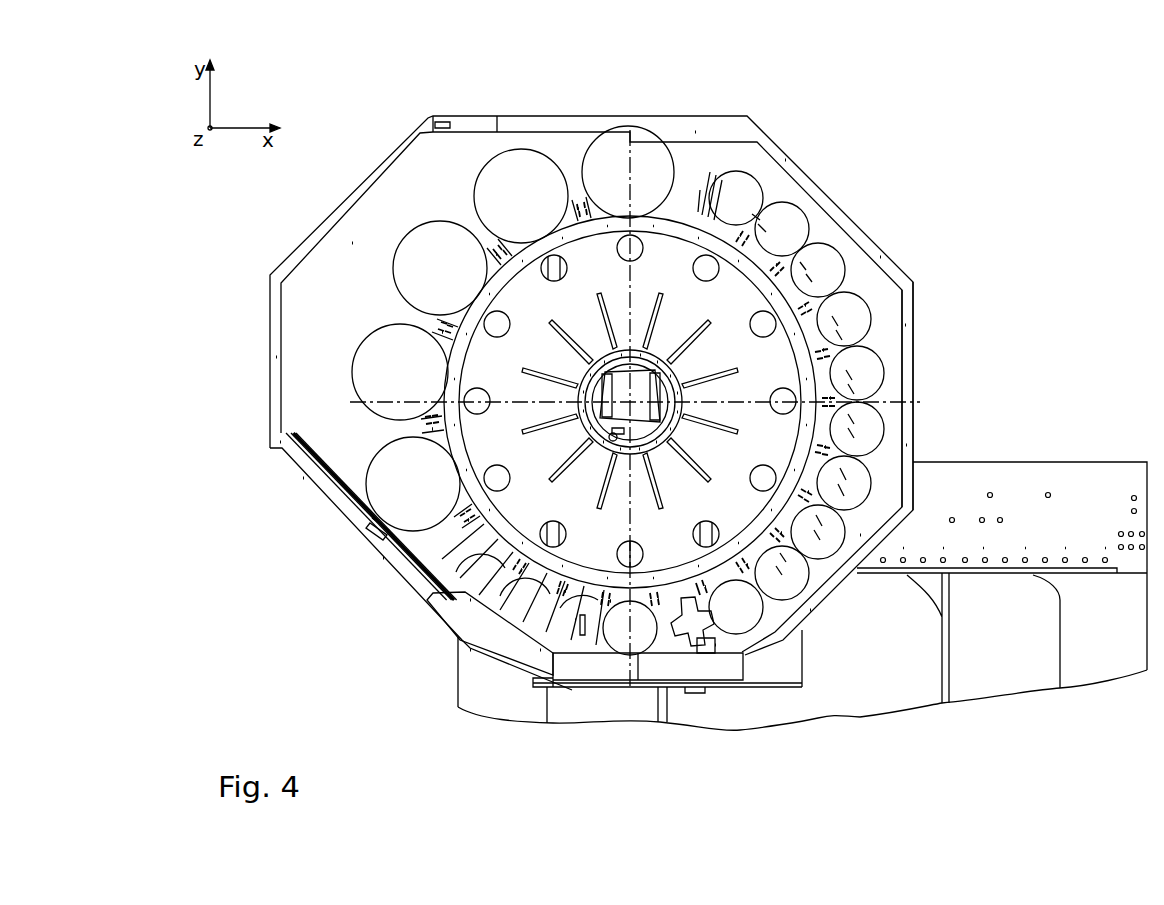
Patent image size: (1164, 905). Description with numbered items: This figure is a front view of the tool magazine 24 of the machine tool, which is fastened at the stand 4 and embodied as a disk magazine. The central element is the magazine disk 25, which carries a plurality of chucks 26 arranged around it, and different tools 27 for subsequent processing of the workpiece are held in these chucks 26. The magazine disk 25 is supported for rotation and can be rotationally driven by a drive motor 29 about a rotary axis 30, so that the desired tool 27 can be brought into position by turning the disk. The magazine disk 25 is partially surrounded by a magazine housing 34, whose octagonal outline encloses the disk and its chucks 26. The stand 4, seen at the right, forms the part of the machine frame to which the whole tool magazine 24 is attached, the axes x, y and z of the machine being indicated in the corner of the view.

The tool magazine 24 is at (665, 107).
The magazine disk 25 is at (723, 297).
The drive motor 29 is at (643, 383).
The rotary axis 30 is at (642, 382).
The magazine housing 34 is at (908, 343).
The stand 4 is at (1047, 468).
The chucks 26 is at (703, 643).
The tools 27 is at (677, 632).